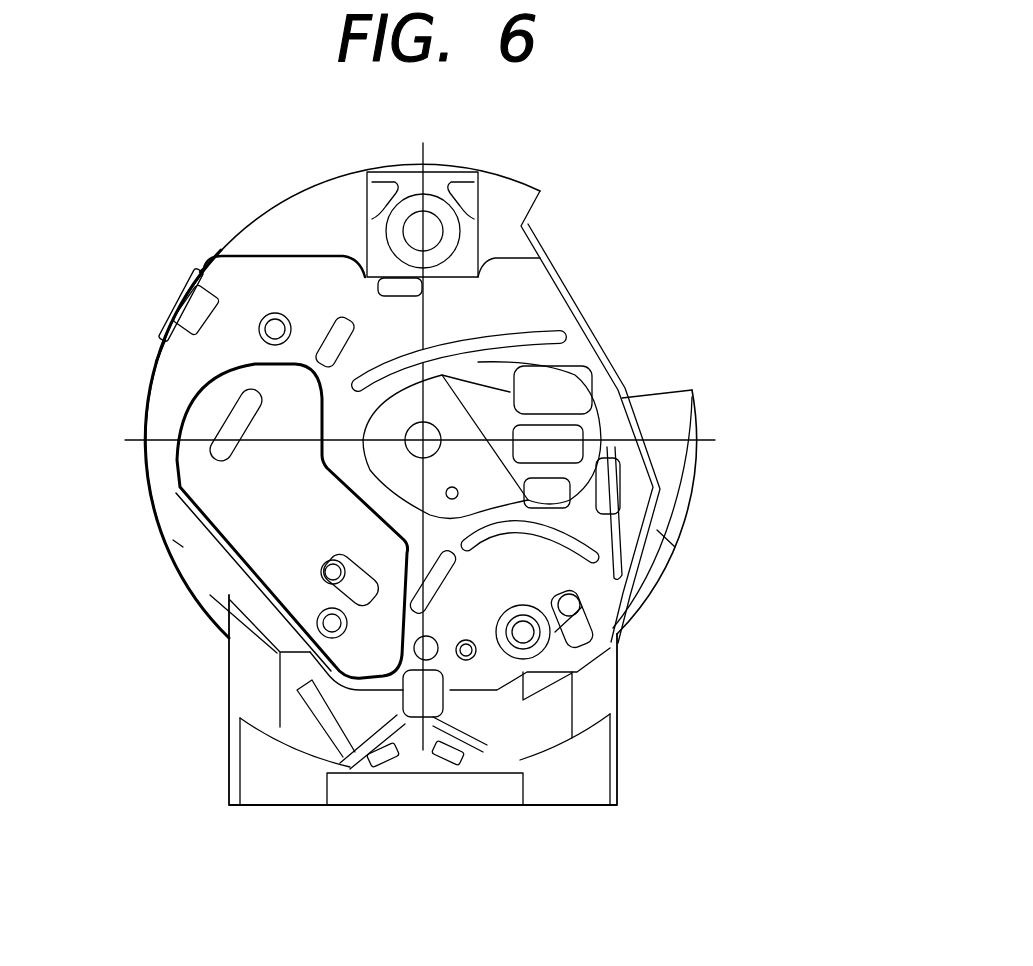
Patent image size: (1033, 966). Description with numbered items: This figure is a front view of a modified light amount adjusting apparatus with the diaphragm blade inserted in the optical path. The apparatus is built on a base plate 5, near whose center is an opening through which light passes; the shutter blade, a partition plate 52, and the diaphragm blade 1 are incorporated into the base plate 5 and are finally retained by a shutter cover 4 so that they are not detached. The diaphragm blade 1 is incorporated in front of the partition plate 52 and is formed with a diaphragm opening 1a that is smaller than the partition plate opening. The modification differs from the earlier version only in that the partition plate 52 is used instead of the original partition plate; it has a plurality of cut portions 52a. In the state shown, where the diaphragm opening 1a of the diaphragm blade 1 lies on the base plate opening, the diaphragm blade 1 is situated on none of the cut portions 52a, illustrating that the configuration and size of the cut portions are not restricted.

The diaphragm blade 1 is at (387, 463).
The diaphragm opening 1a is at (500, 393).
The shutter cover 4 is at (177, 385).
The base plate 5 is at (593, 775).
The partition plate 52 is at (485, 380).
The cut portions 52a is at (538, 373).